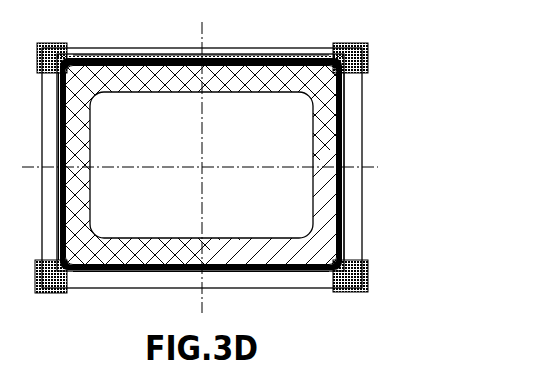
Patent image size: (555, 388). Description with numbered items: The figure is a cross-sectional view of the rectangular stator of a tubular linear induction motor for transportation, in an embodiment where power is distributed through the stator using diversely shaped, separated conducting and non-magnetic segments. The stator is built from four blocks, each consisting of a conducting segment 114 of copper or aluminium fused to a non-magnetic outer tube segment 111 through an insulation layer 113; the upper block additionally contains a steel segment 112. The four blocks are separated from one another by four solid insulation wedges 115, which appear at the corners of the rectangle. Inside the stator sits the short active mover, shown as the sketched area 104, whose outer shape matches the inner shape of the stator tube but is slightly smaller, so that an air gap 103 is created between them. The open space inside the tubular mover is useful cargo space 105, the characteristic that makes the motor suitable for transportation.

The air gap 103 is at (343, 182).
The active mover 104 is at (348, 205).
The cargo space 105 is at (292, 231).
The non-magnetic outer tube segment 111 is at (345, 81).
The steel segment 112 is at (348, 103).
The insulation layer 113 is at (349, 126).
The conducting segment 114 is at (347, 148).
The solid insulation wedge 115 is at (357, 55).